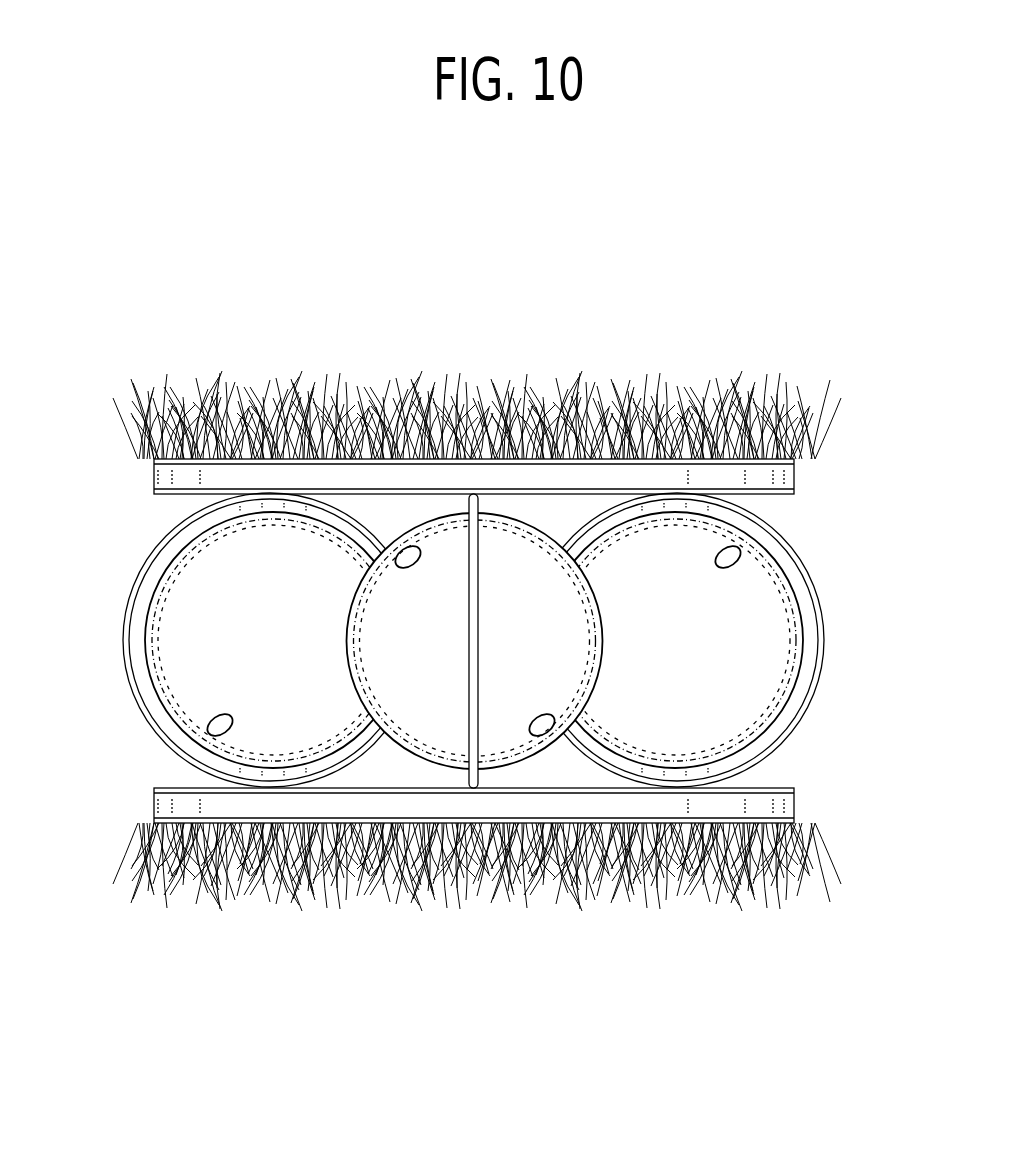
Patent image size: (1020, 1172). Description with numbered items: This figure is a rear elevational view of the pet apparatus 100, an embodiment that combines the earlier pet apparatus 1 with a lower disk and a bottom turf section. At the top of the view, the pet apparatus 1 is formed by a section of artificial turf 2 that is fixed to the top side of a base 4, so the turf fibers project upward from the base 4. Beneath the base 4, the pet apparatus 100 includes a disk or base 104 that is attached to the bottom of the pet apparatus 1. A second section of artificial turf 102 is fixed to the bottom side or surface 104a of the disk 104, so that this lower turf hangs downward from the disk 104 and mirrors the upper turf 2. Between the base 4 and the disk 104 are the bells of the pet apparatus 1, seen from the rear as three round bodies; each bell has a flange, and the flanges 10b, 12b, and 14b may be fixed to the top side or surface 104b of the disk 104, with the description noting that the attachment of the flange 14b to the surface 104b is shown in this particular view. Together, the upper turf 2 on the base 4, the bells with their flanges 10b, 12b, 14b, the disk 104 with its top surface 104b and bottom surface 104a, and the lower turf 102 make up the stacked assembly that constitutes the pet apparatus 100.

The pet apparatus 1 is at (443, 400).
The section of artificial turf 2 is at (375, 378).
The base 4 is at (376, 487).
The flange 10b is at (150, 565).
The flange 12b is at (475, 652).
The flange 14b is at (791, 563).
The pet apparatus 100 is at (505, 611).
The section of artificial turf 102 is at (547, 910).
The disk or base 104 is at (520, 817).
The bottom side or surface 104a is at (785, 827).
The top side or surface 104b is at (765, 790).